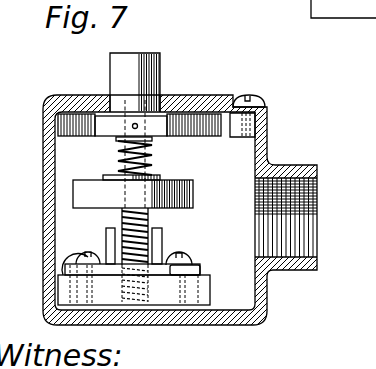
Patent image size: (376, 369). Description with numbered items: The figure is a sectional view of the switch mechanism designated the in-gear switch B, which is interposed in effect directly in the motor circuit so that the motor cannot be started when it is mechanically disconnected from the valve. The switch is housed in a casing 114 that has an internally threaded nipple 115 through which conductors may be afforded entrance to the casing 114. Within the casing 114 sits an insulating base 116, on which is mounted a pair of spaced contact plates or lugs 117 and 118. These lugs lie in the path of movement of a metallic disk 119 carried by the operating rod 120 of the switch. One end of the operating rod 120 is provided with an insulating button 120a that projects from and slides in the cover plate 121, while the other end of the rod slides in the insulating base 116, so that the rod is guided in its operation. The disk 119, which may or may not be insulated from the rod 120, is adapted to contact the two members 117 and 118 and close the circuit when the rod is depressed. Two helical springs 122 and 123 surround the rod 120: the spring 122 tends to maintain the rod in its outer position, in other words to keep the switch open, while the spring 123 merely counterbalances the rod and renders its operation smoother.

The casing 114 is at (218, 323).
The internally threaded nipple 115 is at (307, 240).
The insulating base 116 is at (165, 292).
The contact plate 117 is at (109, 243).
The contact plate 118 is at (167, 239).
The metallic disk 119 is at (194, 206).
The operating rod 120 is at (157, 164).
The insulating button 120a is at (161, 62).
The cover plate 121 is at (202, 96).
The helical spring 122 is at (147, 220).
The helical spring 123 is at (118, 142).
The in-gear switch B is at (257, 157).